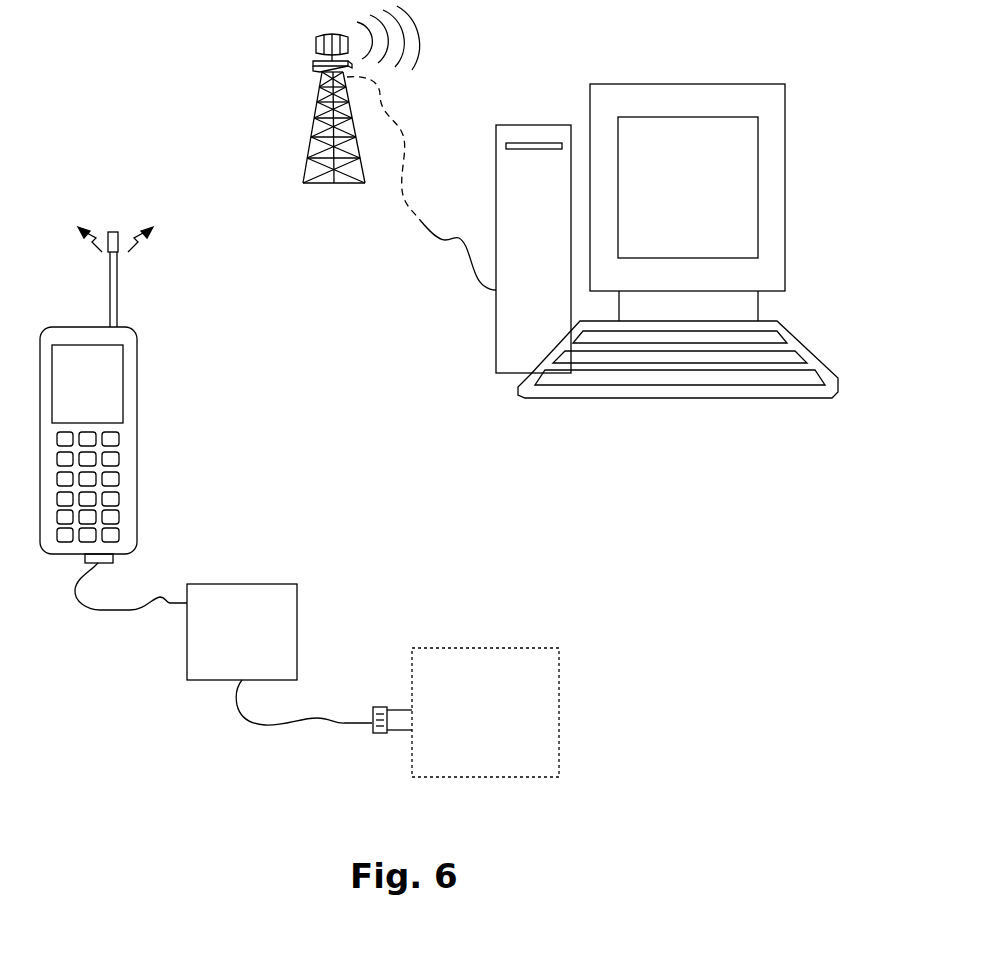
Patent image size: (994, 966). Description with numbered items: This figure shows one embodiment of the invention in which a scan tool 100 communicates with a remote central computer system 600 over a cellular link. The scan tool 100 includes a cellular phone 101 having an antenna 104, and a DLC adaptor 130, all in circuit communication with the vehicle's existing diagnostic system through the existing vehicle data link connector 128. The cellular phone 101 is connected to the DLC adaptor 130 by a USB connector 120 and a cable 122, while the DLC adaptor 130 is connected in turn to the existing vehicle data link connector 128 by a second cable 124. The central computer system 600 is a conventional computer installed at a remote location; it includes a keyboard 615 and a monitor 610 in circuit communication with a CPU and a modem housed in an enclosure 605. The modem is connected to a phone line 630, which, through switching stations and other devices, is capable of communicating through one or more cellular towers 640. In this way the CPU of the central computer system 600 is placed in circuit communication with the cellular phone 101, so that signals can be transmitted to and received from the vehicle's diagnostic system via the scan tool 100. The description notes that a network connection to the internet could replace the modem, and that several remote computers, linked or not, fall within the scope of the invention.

The scan tool 100 is at (303, 528).
The cellular phone 101 is at (124, 390).
The antenna 104 is at (118, 295).
The USB connector 120 is at (115, 558).
The cable 122 is at (117, 612).
The cable 124 is at (267, 728).
The existing vehicle data link connector 128 is at (448, 645).
The DLC adaptor 130 is at (298, 600).
The central computer system 600 is at (628, 295).
The enclosure 605 is at (496, 351).
The monitor 610 is at (588, 100).
The keyboard 615 is at (608, 400).
The phone line 630 is at (452, 242).
The cellular tower 640 is at (318, 110).